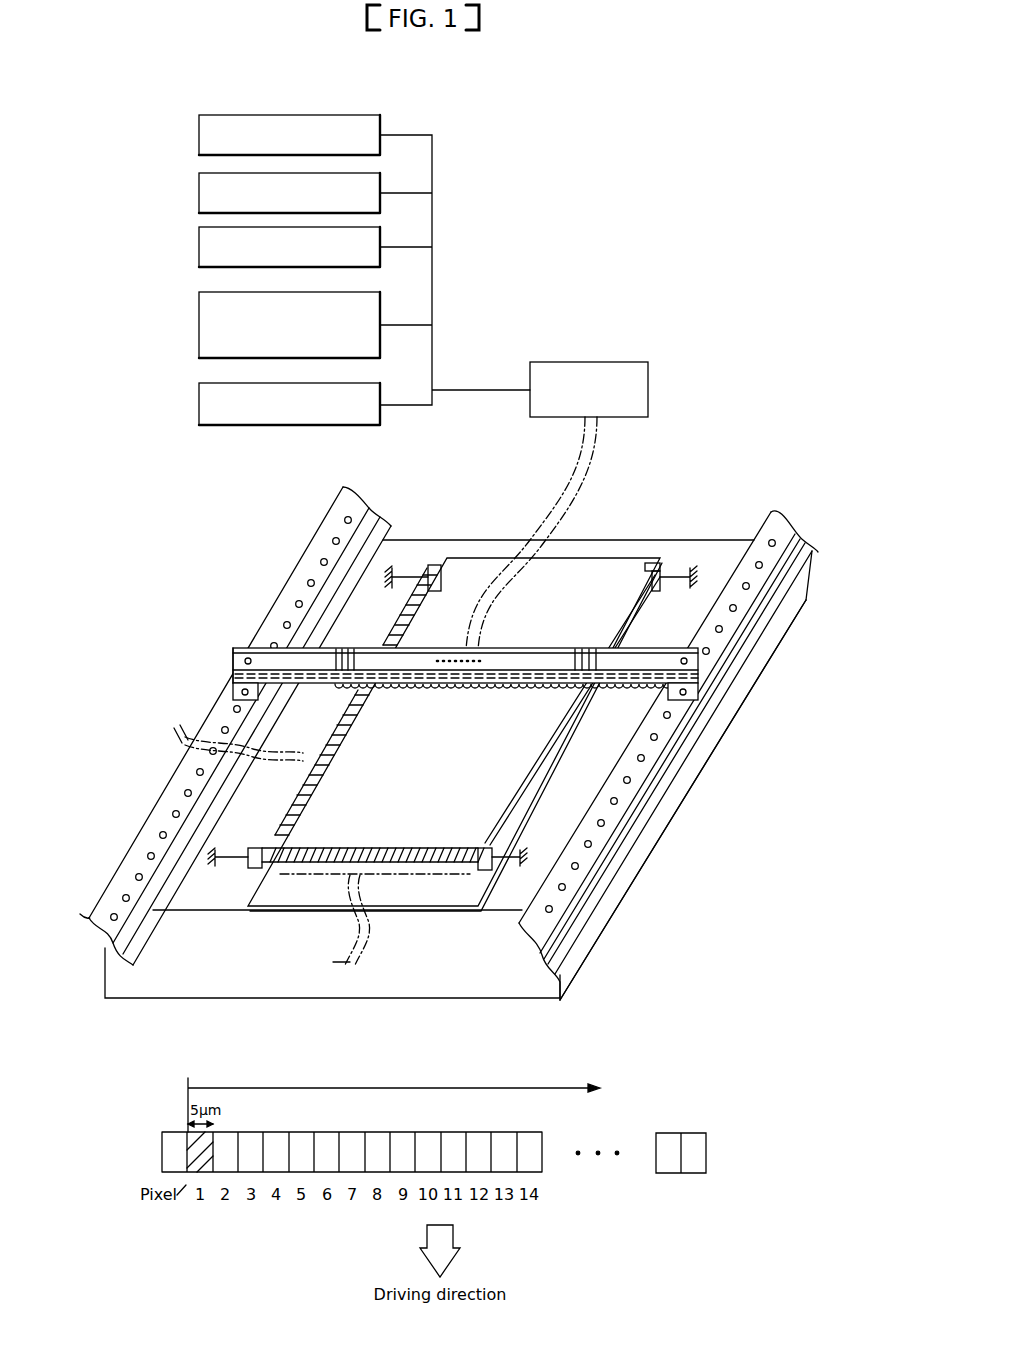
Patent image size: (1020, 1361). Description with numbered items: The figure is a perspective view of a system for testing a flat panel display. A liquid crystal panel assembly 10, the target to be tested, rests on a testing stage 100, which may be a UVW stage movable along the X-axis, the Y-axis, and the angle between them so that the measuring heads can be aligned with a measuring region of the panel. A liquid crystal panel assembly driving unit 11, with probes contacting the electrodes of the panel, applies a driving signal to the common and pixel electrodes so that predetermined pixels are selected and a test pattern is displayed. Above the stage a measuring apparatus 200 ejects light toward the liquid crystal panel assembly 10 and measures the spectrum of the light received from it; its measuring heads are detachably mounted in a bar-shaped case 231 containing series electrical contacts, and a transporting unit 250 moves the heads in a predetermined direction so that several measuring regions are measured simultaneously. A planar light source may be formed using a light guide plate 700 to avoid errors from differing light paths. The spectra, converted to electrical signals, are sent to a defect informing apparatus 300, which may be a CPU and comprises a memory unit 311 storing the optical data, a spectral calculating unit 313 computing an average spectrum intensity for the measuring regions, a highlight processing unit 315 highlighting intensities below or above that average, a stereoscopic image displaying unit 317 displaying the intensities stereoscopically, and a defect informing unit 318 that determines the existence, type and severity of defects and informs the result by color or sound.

The liquid crystal panel assembly 10 is at (538, 777).
The liquid crystal panel assembly driving unit 11 is at (261, 755).
The testing stage 100 is at (477, 999).
The measuring apparatus 200 is at (555, 651).
The case 231 is at (373, 638).
The transporting unit 250 is at (670, 743).
The defect informing apparatus 300 is at (648, 388).
The memory unit 311 is at (199, 135).
The spectral calculating unit 313 is at (199, 193).
The highlight processing unit 315 is at (199, 247).
The stereoscopic image displaying unit 317 is at (199, 325).
The defect informing unit 318 is at (199, 405).
The light guide plate 700 is at (477, 911).